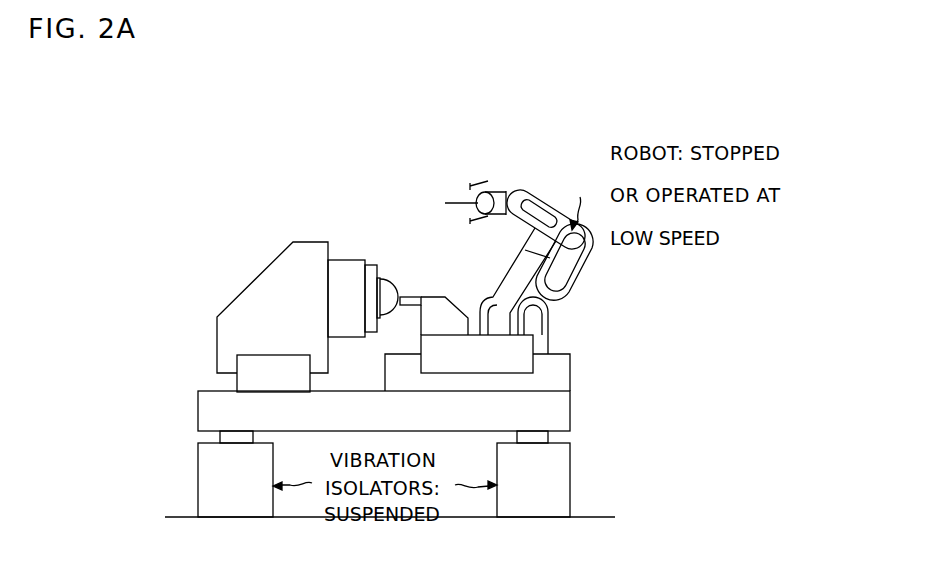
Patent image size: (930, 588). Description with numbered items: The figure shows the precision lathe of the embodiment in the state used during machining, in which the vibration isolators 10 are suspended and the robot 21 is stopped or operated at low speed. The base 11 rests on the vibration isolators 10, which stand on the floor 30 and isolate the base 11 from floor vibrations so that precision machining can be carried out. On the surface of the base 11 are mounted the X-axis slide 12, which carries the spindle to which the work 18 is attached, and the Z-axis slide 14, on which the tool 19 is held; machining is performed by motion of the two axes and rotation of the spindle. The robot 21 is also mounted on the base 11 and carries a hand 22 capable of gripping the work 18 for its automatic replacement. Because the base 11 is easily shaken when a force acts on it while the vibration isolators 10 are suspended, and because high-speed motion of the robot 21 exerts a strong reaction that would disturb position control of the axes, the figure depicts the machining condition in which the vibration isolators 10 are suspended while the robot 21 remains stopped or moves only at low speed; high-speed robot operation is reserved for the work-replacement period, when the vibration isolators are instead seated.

The vibration isolator 10 is at (559, 463).
The base 11 is at (560, 408).
The X-axis slide 12 is at (277, 292).
The Z-axis slide 14 is at (515, 353).
The work 18 is at (393, 293).
The tool 19 is at (408, 296).
The robot 21 is at (578, 273).
The hand 22 is at (488, 183).
The floor 30 is at (599, 517).